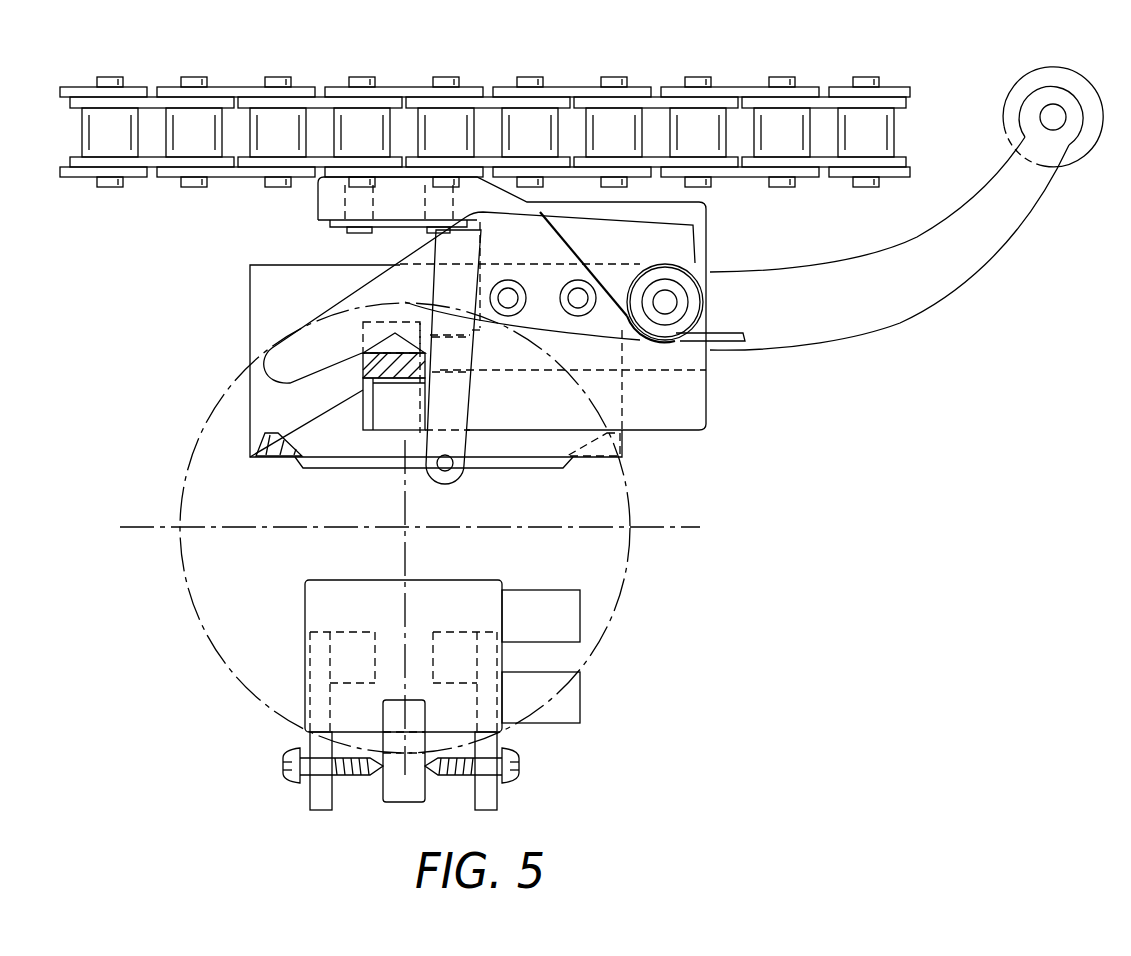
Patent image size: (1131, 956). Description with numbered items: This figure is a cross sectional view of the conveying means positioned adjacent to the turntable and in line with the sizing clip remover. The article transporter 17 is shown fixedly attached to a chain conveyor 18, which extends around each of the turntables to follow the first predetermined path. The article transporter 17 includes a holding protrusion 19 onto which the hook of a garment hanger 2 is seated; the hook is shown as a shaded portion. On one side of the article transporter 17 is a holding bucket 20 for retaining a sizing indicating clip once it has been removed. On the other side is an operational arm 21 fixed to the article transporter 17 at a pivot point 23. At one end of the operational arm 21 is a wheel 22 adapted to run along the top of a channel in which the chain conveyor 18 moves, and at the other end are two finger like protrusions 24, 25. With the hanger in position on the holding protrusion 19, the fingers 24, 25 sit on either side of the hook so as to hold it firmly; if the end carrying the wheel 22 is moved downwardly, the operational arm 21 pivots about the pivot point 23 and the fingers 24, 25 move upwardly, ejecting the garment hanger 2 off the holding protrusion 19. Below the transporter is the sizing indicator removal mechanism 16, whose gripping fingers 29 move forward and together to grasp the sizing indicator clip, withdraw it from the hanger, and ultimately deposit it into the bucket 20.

The chain conveyor 18 is at (213, 85).
The wheel 22 is at (1057, 67).
The pivot point 23 is at (667, 302).
The operational arm 21 is at (967, 280).
The finger like protrusion 24 is at (275, 357).
The garment hanger 2 is at (365, 388).
The article transporter 17 is at (560, 343).
The holding bucket 20 is at (605, 458).
The holding protrusion 19 is at (385, 413).
The finger like protrusion 25 is at (463, 440).
The sizing indicator removal mechanism 16 is at (305, 598).
The gripping fingers 29 is at (313, 797).